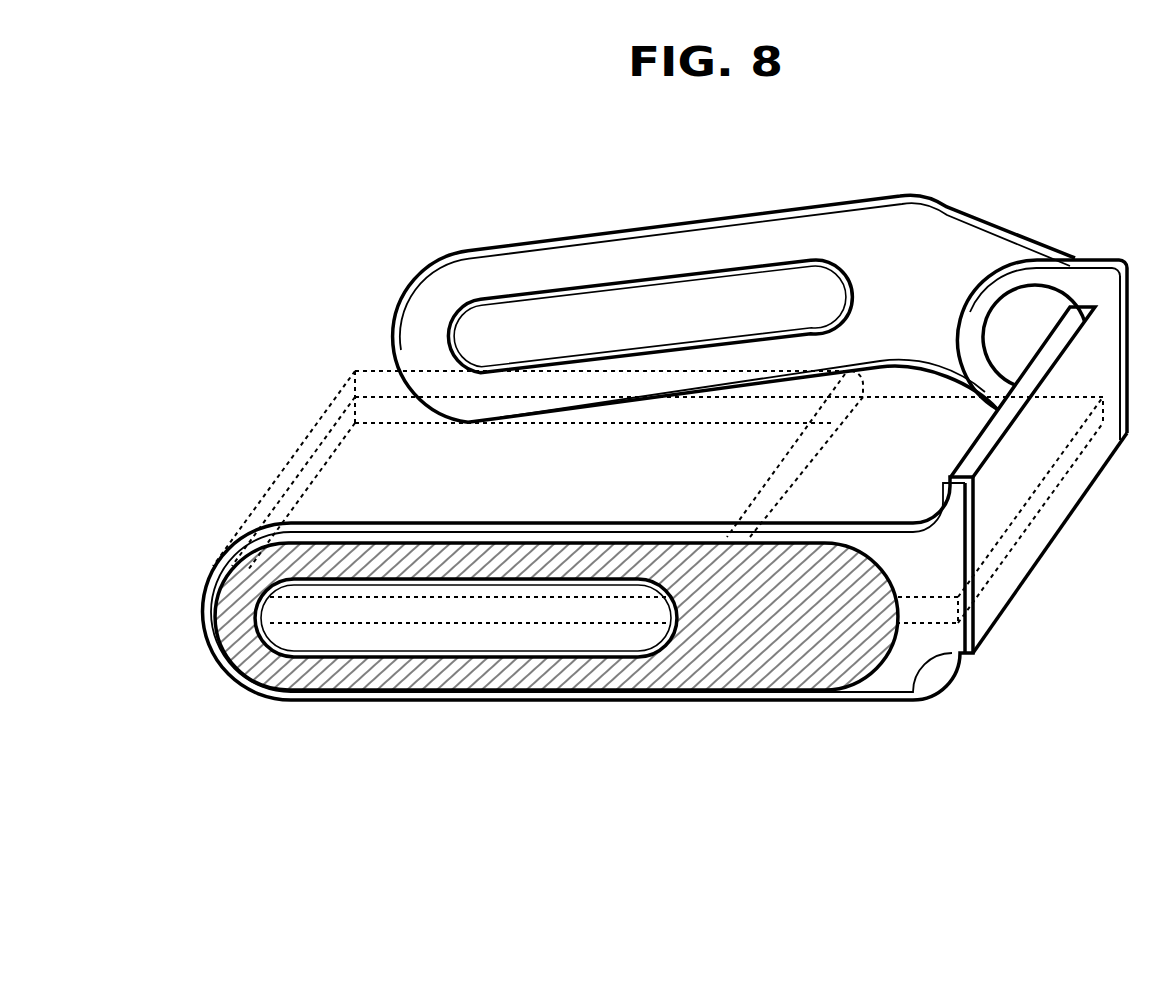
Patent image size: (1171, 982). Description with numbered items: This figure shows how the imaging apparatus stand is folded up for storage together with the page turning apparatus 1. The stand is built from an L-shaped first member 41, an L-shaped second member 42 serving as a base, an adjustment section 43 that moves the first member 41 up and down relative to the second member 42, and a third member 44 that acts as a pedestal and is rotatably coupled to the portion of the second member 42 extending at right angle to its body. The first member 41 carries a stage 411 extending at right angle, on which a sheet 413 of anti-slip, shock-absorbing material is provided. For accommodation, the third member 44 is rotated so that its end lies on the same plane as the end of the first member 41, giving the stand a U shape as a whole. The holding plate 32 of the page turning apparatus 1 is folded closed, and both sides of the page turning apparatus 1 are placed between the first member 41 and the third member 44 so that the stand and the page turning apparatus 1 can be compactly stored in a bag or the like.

The page turning apparatus 1 is at (243, 401).
The holding plate 32 is at (328, 406).
The first member 41 is at (880, 716).
The second member 42 is at (1088, 256).
The adjustment section 43 is at (1038, 553).
The third member 44 is at (690, 220).
The stage 411 is at (463, 695).
The sheet 413 is at (663, 675).